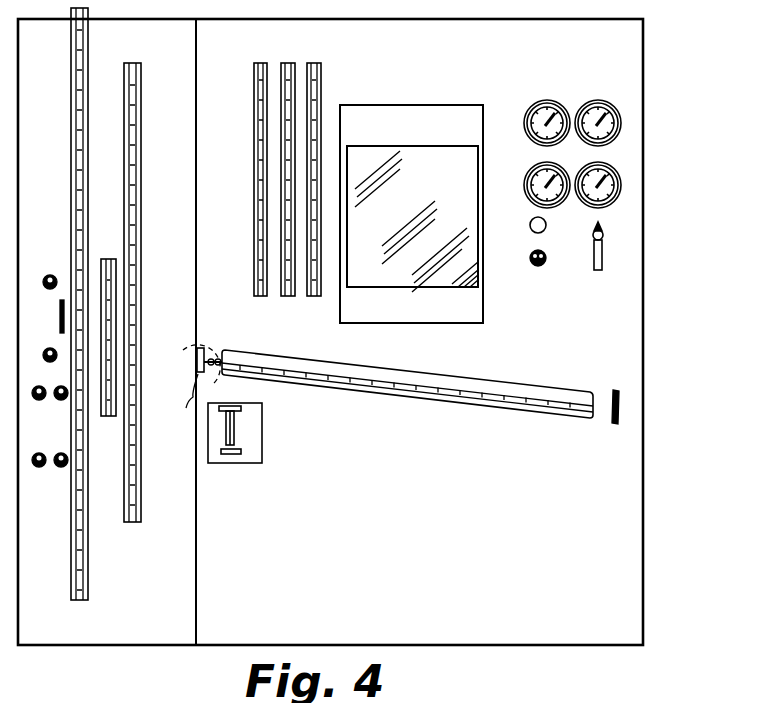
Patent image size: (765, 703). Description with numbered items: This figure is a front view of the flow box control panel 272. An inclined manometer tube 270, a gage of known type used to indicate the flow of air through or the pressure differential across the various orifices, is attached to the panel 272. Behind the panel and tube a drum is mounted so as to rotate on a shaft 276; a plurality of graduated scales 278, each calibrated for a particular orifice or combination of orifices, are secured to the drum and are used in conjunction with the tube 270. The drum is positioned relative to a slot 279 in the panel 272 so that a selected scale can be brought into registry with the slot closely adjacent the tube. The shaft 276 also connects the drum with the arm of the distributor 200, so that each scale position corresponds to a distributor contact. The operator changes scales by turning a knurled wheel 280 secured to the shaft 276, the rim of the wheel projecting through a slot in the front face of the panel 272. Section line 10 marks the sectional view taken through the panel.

The section line 10- 10 is at (598, 358).
The distributor 200 is at (228, 366).
The inclined manometer tube 270 is at (407, 398).
The panel 272 is at (630, 537).
The shaft 276 is at (215, 375).
The graduated scales 278 is at (295, 377).
The slot 279 is at (438, 378).
The knurled wheel 280 is at (620, 407).